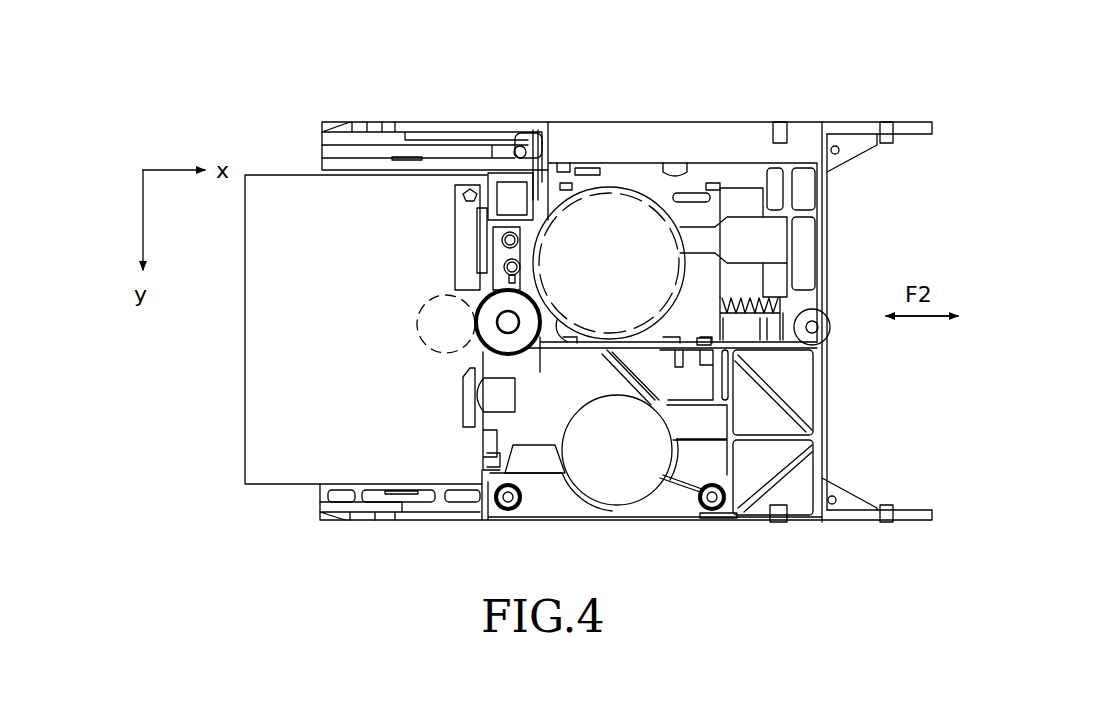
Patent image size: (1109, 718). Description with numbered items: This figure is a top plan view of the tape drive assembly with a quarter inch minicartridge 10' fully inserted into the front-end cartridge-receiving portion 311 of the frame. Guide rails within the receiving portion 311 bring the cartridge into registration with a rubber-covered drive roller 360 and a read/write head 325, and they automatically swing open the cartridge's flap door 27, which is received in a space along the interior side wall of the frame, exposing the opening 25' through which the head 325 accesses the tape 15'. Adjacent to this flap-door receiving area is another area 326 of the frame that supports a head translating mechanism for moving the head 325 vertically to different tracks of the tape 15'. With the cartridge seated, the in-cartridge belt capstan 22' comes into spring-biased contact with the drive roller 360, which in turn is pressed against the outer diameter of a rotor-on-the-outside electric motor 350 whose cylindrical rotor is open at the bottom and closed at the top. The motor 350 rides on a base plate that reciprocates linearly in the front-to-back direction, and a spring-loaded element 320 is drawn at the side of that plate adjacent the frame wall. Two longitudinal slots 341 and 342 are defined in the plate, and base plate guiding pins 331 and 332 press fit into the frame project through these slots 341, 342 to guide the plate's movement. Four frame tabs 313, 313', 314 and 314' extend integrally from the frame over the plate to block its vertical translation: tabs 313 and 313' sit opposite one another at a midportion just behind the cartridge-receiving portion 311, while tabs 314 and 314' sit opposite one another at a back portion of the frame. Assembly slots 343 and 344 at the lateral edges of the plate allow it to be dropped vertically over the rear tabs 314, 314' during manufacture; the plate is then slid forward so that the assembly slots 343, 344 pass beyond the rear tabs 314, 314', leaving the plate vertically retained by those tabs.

The front-end cartridge-receiving portion 311 is at (400, 110).
The minicartridge 10' is at (335, 329).
The longitudinal slot 341 is at (545, 186).
The frame tab 313 is at (558, 132).
The base plate guiding pin 331 is at (583, 170).
The longitudinal slot 342 is at (670, 195).
The assembly slot 343 is at (708, 168).
The frame tab 314 is at (735, 130).
The base plate guiding pin 332 is at (735, 160).
The spring 320 is at (775, 300).
The electric motor 350 is at (609, 263).
The frame tab 313' is at (597, 321).
The drive roller 360 is at (522, 353).
The belt capstan 22' is at (410, 324).
The opening 25' is at (423, 397).
The tape 15' is at (431, 411).
The read/write head 325 is at (515, 392).
The assembly slot 344 is at (661, 342).
The head translating mechanism area 326 is at (617, 450).
The frame tab 314' is at (686, 367).
The flap door 27 is at (540, 462).